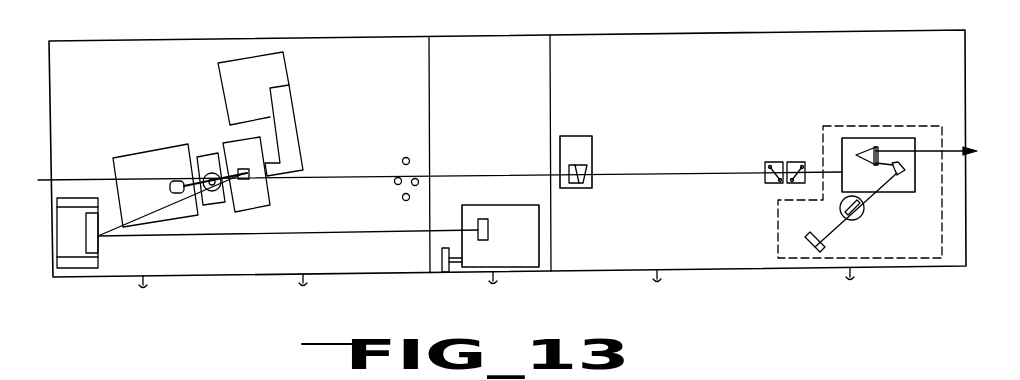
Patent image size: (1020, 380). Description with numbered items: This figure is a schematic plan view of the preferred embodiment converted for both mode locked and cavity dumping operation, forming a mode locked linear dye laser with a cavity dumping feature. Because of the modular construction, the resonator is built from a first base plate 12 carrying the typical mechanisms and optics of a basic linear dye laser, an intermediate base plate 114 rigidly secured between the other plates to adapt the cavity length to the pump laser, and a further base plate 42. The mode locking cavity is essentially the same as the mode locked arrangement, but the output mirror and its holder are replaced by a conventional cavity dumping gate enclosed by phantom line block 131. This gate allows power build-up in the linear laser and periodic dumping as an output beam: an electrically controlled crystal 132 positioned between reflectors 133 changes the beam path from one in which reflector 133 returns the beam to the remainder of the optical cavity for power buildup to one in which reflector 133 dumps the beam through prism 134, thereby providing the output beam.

The first base plate 12 is at (380, 78).
The intermediate base plate 114 is at (500, 78).
The base plate 42 is at (614, 77).
The phantom line block 131 is at (864, 125).
The electrically controlled crystal 132 is at (864, 209).
The reflector 133 is at (896, 162).
The prism 134 is at (860, 156).